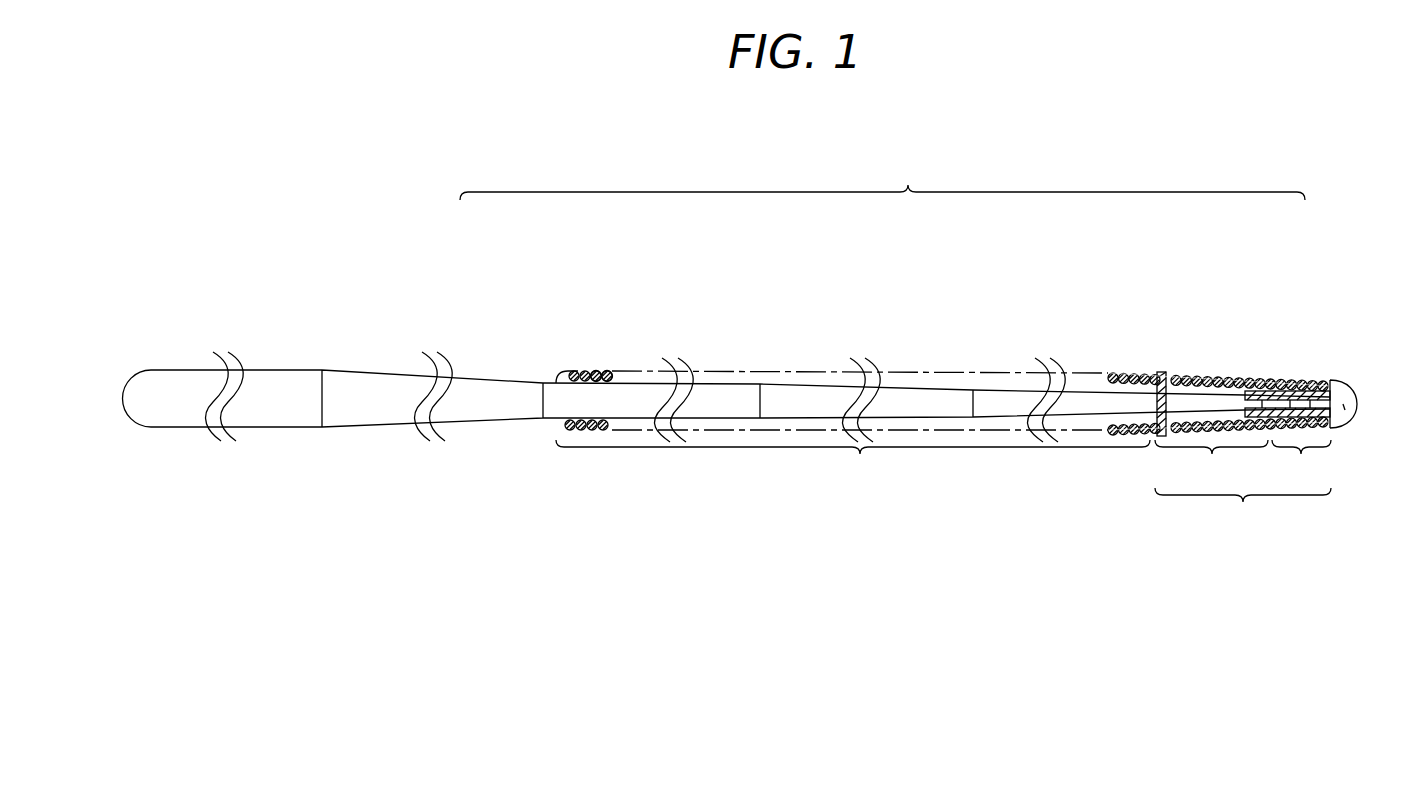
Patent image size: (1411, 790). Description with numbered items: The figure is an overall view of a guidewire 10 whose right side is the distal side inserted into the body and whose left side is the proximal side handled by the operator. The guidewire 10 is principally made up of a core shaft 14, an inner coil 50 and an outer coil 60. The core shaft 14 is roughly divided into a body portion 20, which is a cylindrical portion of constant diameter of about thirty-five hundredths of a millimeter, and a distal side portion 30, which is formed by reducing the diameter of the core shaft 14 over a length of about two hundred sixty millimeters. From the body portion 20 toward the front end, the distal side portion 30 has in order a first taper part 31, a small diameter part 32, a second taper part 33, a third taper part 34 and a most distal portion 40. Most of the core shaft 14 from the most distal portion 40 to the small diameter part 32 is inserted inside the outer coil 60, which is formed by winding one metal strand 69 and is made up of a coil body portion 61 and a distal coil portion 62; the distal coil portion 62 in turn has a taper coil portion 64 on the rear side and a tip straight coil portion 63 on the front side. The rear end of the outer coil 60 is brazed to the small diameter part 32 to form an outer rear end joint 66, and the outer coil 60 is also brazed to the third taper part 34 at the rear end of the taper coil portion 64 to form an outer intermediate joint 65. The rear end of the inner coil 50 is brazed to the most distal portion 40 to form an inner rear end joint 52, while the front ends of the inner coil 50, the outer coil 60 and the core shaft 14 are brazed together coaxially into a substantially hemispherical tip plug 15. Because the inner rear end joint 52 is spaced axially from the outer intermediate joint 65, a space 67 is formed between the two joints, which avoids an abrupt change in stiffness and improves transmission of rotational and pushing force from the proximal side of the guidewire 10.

The guidewire 10 is at (1323, 210).
The core shaft 14 is at (163, 368).
The tip plug 15 is at (1345, 410).
The body portion 20 is at (300, 405).
The distal side portion 30 is at (882, 180).
The first taper part 31 is at (482, 383).
The small diameter part 32 is at (652, 390).
The second taper part 33 is at (790, 390).
The third taper part 34 is at (983, 390).
The most distal portion 40 is at (1298, 383).
The inner coil 50 is at (1318, 382).
The inner rear end joint 52 is at (1250, 382).
The outer coil 60 is at (910, 372).
The coil body portion 61 is at (853, 464).
The distal coil portion 62 is at (1243, 511).
The tip straight coil portion 63 is at (1301, 464).
The taper coil portion 64 is at (1211, 464).
The outer intermediate joint 65 is at (1153, 378).
The outer rear end joint 66 is at (560, 378).
The space 67 is at (1200, 380).
The strand 69 is at (604, 371).